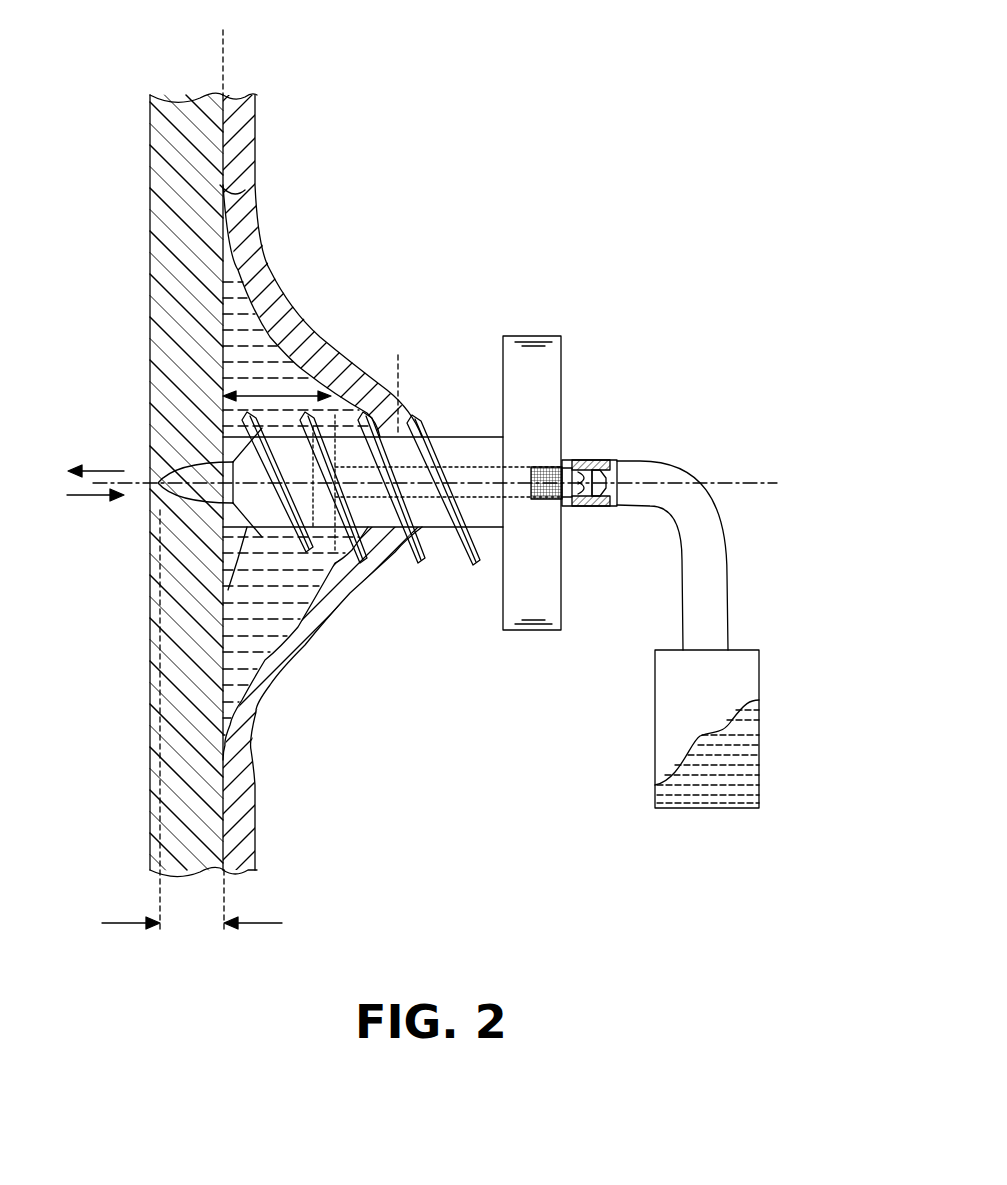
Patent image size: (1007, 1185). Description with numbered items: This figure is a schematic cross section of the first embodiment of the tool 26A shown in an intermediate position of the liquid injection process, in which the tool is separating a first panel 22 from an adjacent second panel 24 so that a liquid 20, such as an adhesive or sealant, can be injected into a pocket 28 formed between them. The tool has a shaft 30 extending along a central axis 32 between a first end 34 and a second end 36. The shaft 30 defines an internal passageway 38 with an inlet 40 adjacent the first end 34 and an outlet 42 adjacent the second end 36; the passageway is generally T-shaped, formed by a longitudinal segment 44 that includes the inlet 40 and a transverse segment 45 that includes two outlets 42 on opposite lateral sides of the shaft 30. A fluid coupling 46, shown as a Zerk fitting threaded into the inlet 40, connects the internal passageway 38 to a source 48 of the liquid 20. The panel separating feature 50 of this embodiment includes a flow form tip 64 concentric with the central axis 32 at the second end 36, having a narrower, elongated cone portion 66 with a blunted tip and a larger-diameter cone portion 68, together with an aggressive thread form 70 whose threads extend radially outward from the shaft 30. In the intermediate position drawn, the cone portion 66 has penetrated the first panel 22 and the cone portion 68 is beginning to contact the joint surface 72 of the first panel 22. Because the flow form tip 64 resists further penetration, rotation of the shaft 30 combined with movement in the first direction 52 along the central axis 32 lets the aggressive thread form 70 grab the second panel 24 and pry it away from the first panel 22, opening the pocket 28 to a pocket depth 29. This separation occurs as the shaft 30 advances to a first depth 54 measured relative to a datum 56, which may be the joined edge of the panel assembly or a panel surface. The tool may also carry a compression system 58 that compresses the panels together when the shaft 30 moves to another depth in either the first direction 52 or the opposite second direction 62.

The liquid 20 is at (283, 360).
The first panel 22 is at (162, 128).
The second panel 24 is at (245, 143).
The first embodiment of the tool 26A is at (432, 341).
The pocket 28 is at (253, 620).
The pocket depth 29 is at (283, 396).
The shaft 30 is at (467, 447).
The central axis 32 is at (770, 478).
The first end 34 is at (508, 510).
The second end 36 is at (262, 530).
The internal passageway 38 is at (482, 472).
The inlet 40 is at (565, 462).
The outlet 42 is at (308, 412).
The longitudinal segment 44 is at (482, 470).
The transverse segment 45 is at (397, 380).
The fluid coupling 46 is at (590, 460).
The source 48 is at (655, 800).
The panel separating feature 50 is at (239, 423).
The first direction 52 is at (93, 470).
The first depth 54 is at (262, 923).
The datum 56 is at (225, 70).
The compression system 58 is at (414, 452).
The second direction 62 is at (76, 495).
The flow form tip 64 is at (223, 550).
The cone portion 66 is at (158, 478).
The cone portion 68 is at (234, 513).
The aggressive thread form 70 is at (340, 438).
The joint surface 72 is at (238, 190).